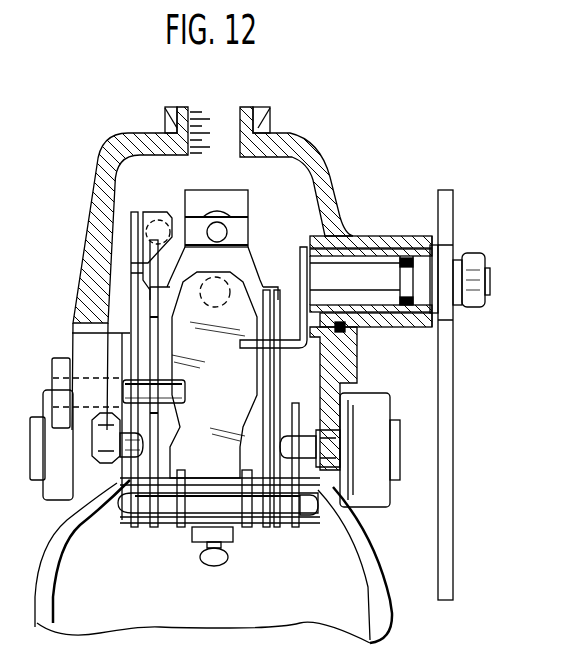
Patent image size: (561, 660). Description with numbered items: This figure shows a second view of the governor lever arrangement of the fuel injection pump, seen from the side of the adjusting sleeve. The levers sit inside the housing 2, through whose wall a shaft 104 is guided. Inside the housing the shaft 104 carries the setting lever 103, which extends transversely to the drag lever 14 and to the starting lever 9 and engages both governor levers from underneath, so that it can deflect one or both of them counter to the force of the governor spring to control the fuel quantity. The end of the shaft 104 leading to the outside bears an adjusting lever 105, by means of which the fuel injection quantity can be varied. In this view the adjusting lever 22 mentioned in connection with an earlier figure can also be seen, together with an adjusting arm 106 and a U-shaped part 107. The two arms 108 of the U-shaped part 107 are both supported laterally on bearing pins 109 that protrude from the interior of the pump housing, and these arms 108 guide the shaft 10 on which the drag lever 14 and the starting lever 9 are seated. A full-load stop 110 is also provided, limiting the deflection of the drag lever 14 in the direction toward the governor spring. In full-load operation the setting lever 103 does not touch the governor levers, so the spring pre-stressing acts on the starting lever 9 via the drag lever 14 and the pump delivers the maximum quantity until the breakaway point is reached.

The housing 2 is at (323, 187).
The starting lever 9 is at (213, 375).
The shaft 10 is at (307, 520).
The drag lever 14 is at (238, 203).
The adjusting lever 22 is at (138, 225).
The setting lever 103 is at (248, 355).
The shaft 104 is at (362, 277).
The adjusting lever 105 is at (445, 378).
The adjusting arm 106 is at (138, 273).
The U-shaped part 107 is at (143, 465).
The arms 108 is at (293, 407).
The bearing pins 109 is at (150, 447).
The full-load stop 110 is at (180, 397).